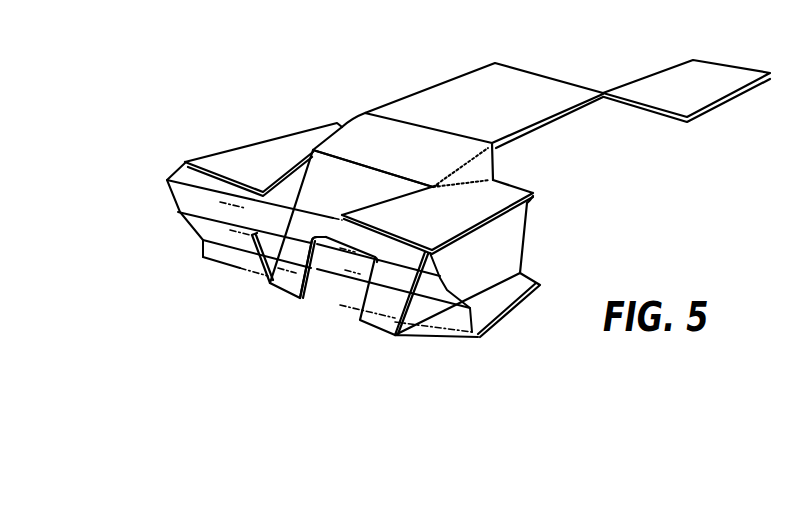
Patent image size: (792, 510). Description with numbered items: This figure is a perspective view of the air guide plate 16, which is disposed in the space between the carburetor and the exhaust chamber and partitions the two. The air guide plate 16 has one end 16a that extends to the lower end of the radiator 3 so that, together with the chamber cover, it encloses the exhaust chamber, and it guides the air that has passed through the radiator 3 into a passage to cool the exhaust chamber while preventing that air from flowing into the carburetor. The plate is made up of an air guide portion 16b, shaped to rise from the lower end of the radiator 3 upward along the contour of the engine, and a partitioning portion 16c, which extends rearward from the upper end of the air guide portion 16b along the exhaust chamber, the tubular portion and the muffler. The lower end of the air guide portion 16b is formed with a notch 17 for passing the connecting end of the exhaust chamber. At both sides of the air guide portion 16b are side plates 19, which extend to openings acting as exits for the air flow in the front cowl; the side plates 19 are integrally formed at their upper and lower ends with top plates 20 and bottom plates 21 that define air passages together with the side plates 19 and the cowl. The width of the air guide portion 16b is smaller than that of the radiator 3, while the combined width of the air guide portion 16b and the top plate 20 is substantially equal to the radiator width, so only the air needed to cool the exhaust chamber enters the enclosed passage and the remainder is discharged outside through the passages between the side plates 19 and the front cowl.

The radiator 3 is at (167, 176).
The air guide plate 16 is at (435, 80).
The end of the air guide plate 16a is at (285, 293).
The air guide portion 16b is at (369, 184).
The partitioning portion 16c is at (548, 95).
The notch 17 is at (314, 270).
The side plates 19 is at (510, 240).
The top plates 20 is at (261, 160).
The bottom plates 21 is at (510, 300).